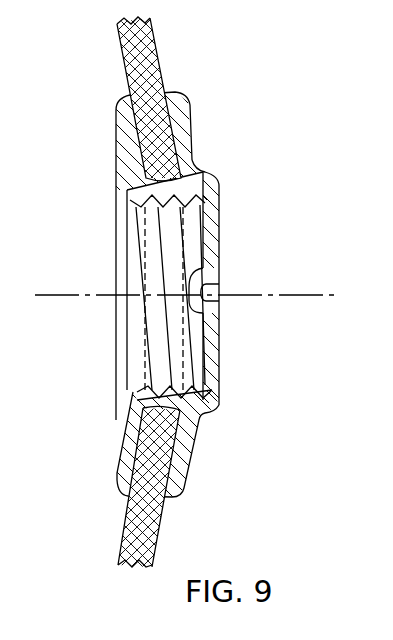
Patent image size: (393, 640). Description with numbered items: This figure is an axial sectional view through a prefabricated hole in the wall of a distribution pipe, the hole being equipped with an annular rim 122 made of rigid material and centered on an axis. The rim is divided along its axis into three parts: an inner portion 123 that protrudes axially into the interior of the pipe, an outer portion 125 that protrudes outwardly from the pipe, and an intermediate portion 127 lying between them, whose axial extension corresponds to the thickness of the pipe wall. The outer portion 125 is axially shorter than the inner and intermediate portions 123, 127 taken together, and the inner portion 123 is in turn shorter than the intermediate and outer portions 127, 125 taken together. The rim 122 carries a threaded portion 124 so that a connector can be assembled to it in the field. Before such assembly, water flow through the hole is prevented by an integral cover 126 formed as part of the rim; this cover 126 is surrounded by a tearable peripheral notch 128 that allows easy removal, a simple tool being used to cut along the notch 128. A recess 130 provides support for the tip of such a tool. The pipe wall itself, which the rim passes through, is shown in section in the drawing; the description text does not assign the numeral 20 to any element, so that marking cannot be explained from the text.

The annular rim 122 is at (270, 146).
The inner portion 123 is at (142, 183).
The threaded portion 124 is at (138, 356).
The outer portion 125 is at (195, 167).
The integral cover 126 is at (215, 386).
The intermediate portion 127 is at (178, 233).
The tearable peripheral notch 128 is at (214, 197).
The recess 130 is at (212, 290).
The tube 20 is at (166, 515).